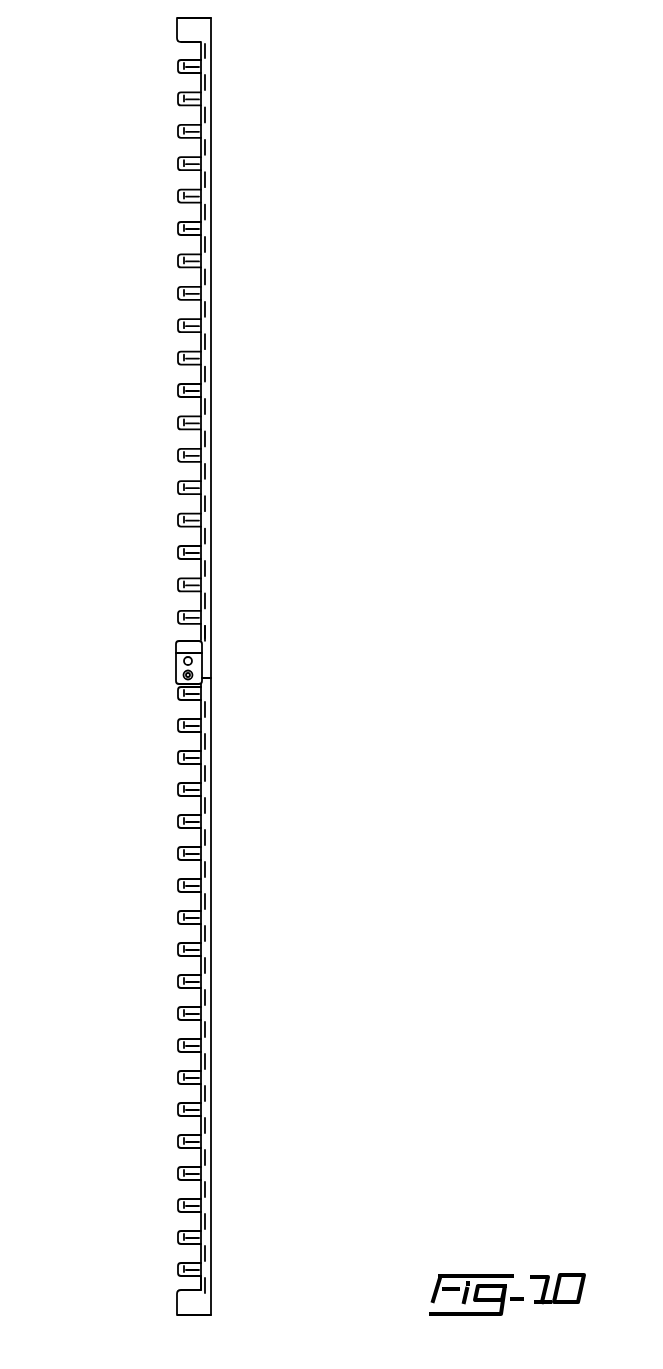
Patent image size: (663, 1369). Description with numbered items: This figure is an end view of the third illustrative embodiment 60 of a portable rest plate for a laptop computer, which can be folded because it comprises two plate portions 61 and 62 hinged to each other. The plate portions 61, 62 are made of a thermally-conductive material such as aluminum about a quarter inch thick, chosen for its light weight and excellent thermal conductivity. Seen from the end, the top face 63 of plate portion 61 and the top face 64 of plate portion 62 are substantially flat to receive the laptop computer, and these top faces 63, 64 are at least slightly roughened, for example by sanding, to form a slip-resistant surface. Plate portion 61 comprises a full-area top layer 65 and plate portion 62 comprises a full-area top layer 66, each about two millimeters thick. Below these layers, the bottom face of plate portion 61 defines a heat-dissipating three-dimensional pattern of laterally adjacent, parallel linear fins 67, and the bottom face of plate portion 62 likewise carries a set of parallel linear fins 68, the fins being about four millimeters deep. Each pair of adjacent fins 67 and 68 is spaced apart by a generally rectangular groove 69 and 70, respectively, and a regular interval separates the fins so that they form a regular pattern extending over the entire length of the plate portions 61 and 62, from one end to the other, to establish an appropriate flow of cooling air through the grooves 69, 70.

The third illustrative embodiment 60 is at (253, 360).
The plate portion 61 is at (212, 203).
The plate portion 62 is at (212, 1221).
The top face 63 is at (212, 440).
The top face 64 is at (212, 838).
The full-area top layer 65 is at (182, 243).
The full-area top layer 66 is at (182, 1034).
The linear fins 67 is at (182, 355).
The linear fins 68 is at (182, 1142).
The rectangular groove 69 is at (188, 83).
The rectangular groove 70 is at (182, 807).